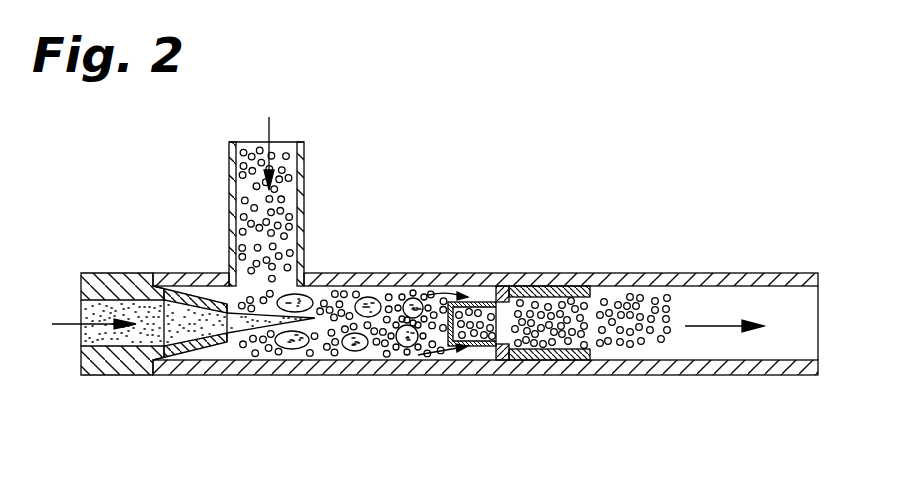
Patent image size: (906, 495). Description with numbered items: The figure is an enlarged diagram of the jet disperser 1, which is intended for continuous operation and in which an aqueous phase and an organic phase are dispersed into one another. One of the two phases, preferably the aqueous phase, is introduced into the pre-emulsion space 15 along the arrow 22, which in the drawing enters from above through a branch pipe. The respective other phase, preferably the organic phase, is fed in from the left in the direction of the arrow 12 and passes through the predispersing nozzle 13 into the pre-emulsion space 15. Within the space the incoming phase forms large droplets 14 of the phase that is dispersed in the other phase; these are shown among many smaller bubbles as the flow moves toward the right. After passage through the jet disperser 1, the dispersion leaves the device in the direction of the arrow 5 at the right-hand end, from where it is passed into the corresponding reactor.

The jet disperser 1 is at (540, 372).
The arrow 5 is at (730, 326).
The line 12 is at (73, 324).
The predispersing nozzle 13 is at (195, 347).
The large droplets 14 is at (355, 347).
The pre-emulsion space 15 is at (422, 352).
The line 22 is at (267, 128).